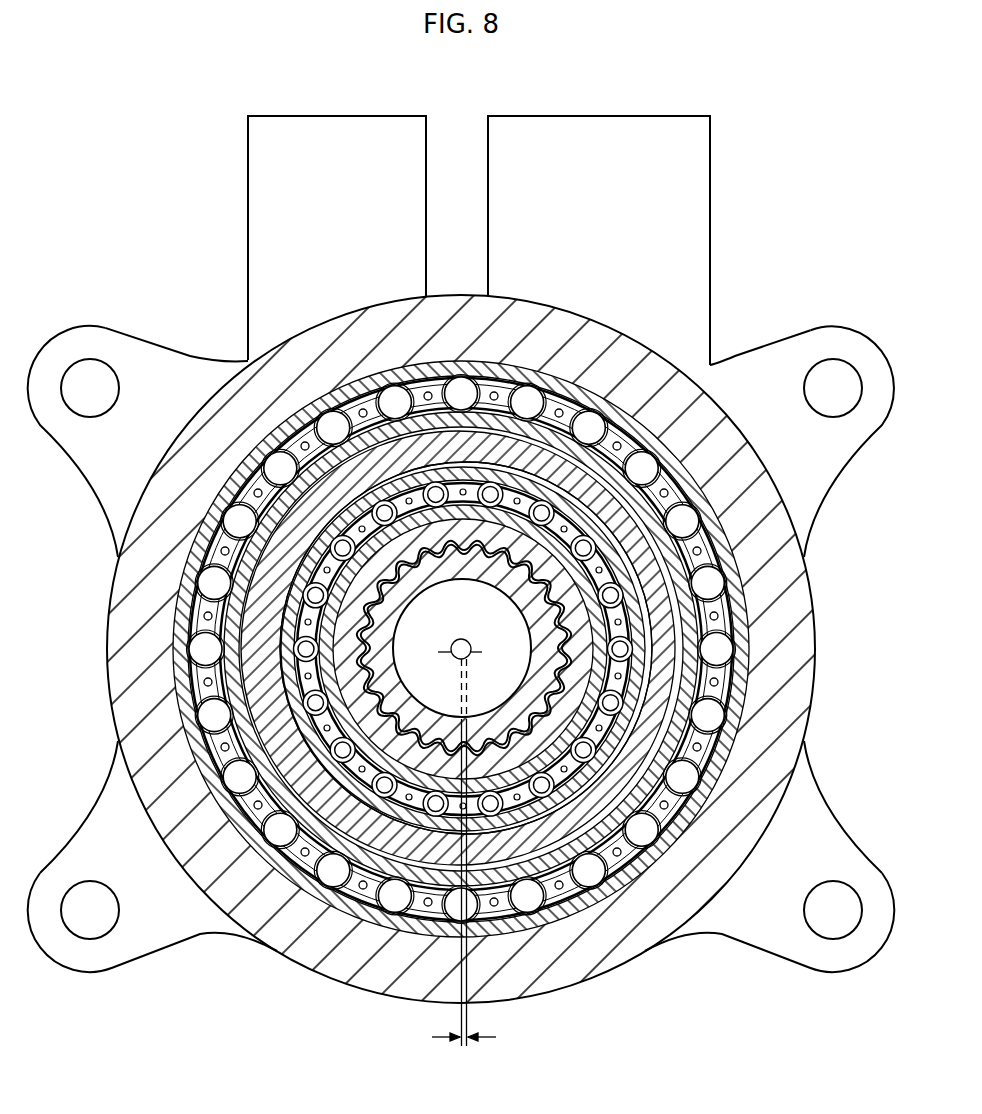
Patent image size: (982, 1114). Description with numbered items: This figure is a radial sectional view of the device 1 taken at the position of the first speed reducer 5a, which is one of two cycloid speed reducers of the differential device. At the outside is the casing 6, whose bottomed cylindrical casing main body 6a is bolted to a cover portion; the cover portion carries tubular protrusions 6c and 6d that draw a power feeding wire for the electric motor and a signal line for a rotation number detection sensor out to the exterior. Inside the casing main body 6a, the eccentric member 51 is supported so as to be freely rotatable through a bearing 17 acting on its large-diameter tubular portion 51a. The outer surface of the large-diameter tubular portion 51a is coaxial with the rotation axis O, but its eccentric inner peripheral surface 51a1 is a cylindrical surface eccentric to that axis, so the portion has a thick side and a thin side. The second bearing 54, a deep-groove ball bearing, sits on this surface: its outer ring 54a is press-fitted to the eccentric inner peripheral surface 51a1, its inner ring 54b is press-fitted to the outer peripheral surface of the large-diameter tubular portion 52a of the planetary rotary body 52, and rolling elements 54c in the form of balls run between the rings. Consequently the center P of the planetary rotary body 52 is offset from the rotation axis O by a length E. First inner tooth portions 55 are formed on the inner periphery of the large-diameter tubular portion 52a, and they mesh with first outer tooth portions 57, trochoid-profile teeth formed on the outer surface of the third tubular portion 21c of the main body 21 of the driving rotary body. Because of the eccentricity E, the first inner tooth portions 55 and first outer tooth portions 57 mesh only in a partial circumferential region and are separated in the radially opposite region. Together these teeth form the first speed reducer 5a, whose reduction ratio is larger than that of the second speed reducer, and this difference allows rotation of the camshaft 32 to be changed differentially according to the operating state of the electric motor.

The gear device 1 is at (826, 166).
The casing 6 is at (100, 575).
The casing main body 6a is at (122, 661).
The tubular protrusion 6c is at (682, 193).
The tubular protrusion 6d is at (282, 193).
The bearing 17 is at (754, 634).
The camshaft 32 is at (440, 631).
The eccentric member 51 is at (593, 497).
The large-diameter tubular portion 51a is at (461, 649).
The eccentric inner peripheral surface 51a1 is at (640, 598).
The planetary rotary body 52 is at (330, 775).
The large-diameter tubular portion 52a is at (463, 649).
The second bearing 54 is at (649, 707).
The outer ring 54a is at (612, 758).
The inner ring 54b is at (548, 835).
The rolling elements 54c is at (638, 646).
The first inner tooth portions 55 is at (560, 885).
The first outer tooth portions 57 is at (516, 895).
The first speed reducer 5a is at (600, 1047).
The main body 21 is at (435, 745).
The third tubular portion 21c is at (464, 648).